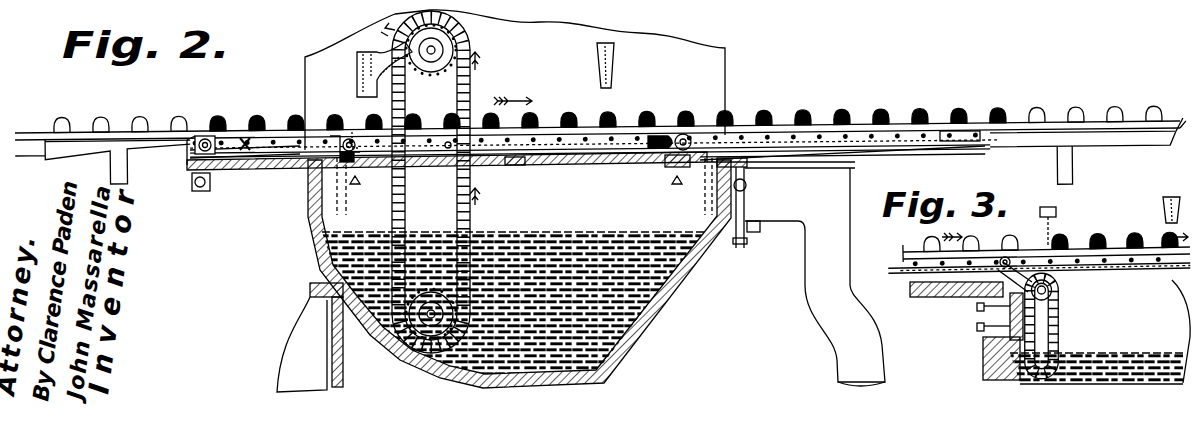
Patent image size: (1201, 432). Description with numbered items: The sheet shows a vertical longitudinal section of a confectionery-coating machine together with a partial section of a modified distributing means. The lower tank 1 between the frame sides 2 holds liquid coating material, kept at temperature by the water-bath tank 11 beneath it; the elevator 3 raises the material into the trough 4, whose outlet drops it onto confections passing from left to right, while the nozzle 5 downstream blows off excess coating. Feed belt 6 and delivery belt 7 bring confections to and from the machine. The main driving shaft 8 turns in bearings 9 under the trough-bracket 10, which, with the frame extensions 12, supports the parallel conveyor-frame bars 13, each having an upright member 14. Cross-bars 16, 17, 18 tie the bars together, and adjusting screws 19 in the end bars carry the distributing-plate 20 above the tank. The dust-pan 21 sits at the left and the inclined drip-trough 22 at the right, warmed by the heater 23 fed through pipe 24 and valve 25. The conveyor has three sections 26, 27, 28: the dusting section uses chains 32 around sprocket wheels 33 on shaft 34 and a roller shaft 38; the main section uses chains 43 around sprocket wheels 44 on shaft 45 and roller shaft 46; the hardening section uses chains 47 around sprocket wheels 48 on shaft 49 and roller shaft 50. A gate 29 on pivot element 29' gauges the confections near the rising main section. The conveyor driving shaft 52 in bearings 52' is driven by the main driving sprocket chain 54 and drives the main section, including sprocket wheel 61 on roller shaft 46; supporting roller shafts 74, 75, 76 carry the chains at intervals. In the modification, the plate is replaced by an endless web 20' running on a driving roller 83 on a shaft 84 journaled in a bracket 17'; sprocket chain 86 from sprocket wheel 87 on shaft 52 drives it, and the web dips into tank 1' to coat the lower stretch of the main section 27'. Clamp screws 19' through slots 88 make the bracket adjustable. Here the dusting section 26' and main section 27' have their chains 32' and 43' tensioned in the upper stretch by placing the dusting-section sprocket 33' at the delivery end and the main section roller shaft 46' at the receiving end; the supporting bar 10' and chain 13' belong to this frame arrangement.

In FIG. 2, the tank 1 is at (584, 273).
In FIG. 3, the tank 1' is at (1074, 332).
In FIG. 2, the frame sides 2 is at (718, 78).
In FIG. 2, the elevator or carrier 3 is at (470, 96).
In FIG. 2, the trough 4 is at (355, 62).
In FIG. 3, the trough 4 is at (1040, 212).
In FIG. 2, the nozzle 5 is at (614, 68).
In FIG. 3, the nozzle 5 is at (1163, 208).
In FIG. 2, the conveyor belt 6 is at (118, 132).
In FIG. 2, the conveyor belt 7 is at (1012, 130).
In FIG. 2, the main driving shaft 8 is at (205, 190).
In FIG. 2, the bearings 9 is at (211, 182).
In FIG. 2, the trough-bracket 10 is at (447, 181).
In FIG. 3, the supporting bar (modified) 10' is at (956, 303).
In FIG. 2, the water-bath tank 11 is at (330, 340).
In FIG. 2, the frame extensions 12 is at (856, 170).
In FIG. 2, the conveyor-frame bars 13 is at (597, 125).
In FIG. 3, the conveyor chain (modified) 13' is at (1039, 239).
In FIG. 2, the upright member 14 is at (232, 130).
In FIG. 2, the cross-bar 16 is at (526, 165).
In FIG. 2, the cross-bar 17 is at (359, 183).
In FIG. 3, the bracket 17' is at (985, 378).
In FIG. 2, the cross-bar 18 is at (667, 166).
In FIG. 2, the adjusting screws 19 is at (518, 192).
In FIG. 3, the clamp screws 19' is at (975, 325).
In FIG. 2, the distributing-plate 20 is at (595, 174).
In FIG. 3, the endless web 20' is at (1076, 318).
In FIG. 2, the dust-pan 21 is at (191, 163).
In FIG. 3, the dust-pan 21 is at (915, 297).
In FIG. 2, the drip-trough 22 is at (903, 160).
In FIG. 2, the heater 23 is at (748, 185).
In FIG. 2, the pipe 24 is at (746, 240).
In FIG. 2, the valve 25 is at (752, 220).
In FIG. 2, the first conveyor section 26 is at (245, 126).
In FIG. 3, the dusting section 26' is at (881, 262).
In FIG. 2, the second conveyor section 27 is at (634, 112).
In FIG. 3, the main section 27' is at (1167, 305).
In FIG. 2, the third conveyor section 28 is at (865, 128).
In FIG. 2, the gate 29 is at (296, 182).
In FIG. 3, the pivot element 29' is at (969, 305).
In FIG. 2, the chains 32 is at (321, 112).
In FIG. 3, the chains 32' is at (905, 239).
In FIG. 2, the sprocket wheels 33 is at (201, 129).
In FIG. 3, the dusting-section sprocket 33' is at (1000, 246).
In FIG. 2, the shaft 34 is at (185, 155).
In FIG. 2, the roller shaft 38 is at (345, 130).
In FIG. 2, the chains 43 is at (561, 111).
In FIG. 3, the chains 43' is at (1115, 290).
In FIG. 2, the sprocket wheels 44 is at (245, 131).
In FIG. 2, the shaft 45 is at (365, 132).
In FIG. 2, the roller shaft 46 is at (664, 119).
In FIG. 3, the main section roller shaft 46' is at (1019, 259).
In FIG. 2, the chains 47 is at (780, 130).
In FIG. 2, the sprocket wheels 48 is at (690, 136).
In FIG. 2, the shaft 49 is at (655, 153).
In FIG. 2, the roller shaft 50 is at (980, 130).
In FIG. 2, the conveyor driving shaft 52 is at (442, 167).
In FIG. 3, the bearings 52' is at (1140, 283).
In FIG. 2, the main driving sprocket chain 54 is at (243, 5).
In FIG. 2, the sprocket wheel 61 is at (655, 5).
In FIG. 3, the supporting roller shafts 74 is at (905, 276).
In FIG. 2, the supporting roller shafts 75 is at (505, 140).
In FIG. 3, the supporting roller shafts 75 is at (1160, 275).
In FIG. 2, the supporting roller shafts 76 is at (912, 125).
In FIG. 3, the driving roller 83 is at (1060, 298).
In FIG. 3, the shaft 84 is at (1052, 289).
In FIG. 3, the sprocket chain 86 is at (1108, 292).
In FIG. 3, the sprocket wheel 87 is at (1117, 248).
In FIG. 3, the slots 88 is at (980, 330).